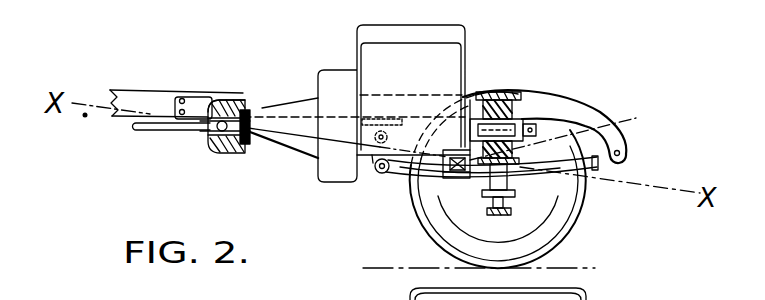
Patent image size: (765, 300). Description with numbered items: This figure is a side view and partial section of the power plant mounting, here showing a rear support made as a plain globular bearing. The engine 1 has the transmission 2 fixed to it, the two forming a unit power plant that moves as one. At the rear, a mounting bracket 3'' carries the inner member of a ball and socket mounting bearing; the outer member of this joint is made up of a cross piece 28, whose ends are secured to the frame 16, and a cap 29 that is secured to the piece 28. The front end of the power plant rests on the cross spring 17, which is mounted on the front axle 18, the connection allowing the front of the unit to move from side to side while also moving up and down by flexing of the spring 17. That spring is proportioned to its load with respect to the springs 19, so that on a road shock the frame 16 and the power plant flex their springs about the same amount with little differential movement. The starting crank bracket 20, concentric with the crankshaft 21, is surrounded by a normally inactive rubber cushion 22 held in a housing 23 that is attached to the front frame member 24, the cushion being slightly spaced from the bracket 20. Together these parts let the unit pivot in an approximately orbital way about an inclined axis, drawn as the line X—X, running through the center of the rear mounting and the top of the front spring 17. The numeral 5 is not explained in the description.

The engine 1 is at (405, 50).
The transmission 2 is at (293, 140).
The mounting bracket 3'' is at (261, 88).
The rod 5 is at (134, 131).
The frame 16 is at (124, 90).
The cross spring 17 is at (443, 178).
The front axle 18 is at (511, 214).
The springs 19 is at (595, 170).
The starting crank bracket 20 is at (478, 128).
The crankshaft 21 is at (525, 128).
The rubber cushion 22 is at (563, 126).
The housing 23 is at (518, 160).
The front frame member 24 is at (530, 97).
The cross piece 28 is at (213, 152).
The cap 29 is at (218, 100).